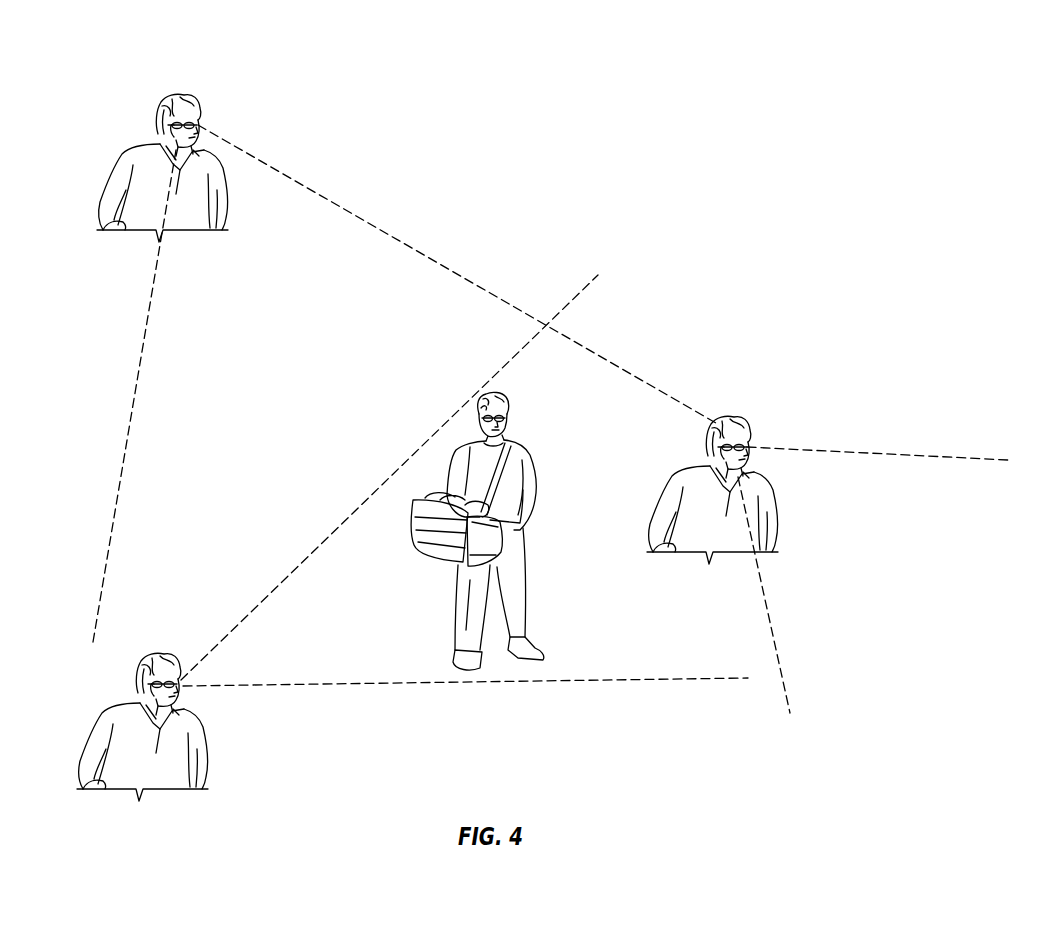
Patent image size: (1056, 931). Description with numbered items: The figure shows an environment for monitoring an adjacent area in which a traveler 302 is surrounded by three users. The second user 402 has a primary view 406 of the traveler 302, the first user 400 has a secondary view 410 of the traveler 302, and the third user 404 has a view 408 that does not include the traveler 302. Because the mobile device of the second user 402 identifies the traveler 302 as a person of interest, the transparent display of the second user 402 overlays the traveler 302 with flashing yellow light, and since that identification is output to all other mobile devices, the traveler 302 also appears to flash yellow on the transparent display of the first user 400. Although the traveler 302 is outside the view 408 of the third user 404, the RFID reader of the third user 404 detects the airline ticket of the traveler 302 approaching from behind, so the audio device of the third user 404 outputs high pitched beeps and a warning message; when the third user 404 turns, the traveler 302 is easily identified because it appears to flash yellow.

The traveler 302 is at (546, 581).
The first user 400 is at (205, 114).
The second user 402 is at (141, 688).
The third user 404 is at (751, 438).
The primary view 406 is at (209, 646).
The view 408 is at (870, 418).
The secondary view 410 is at (268, 157).